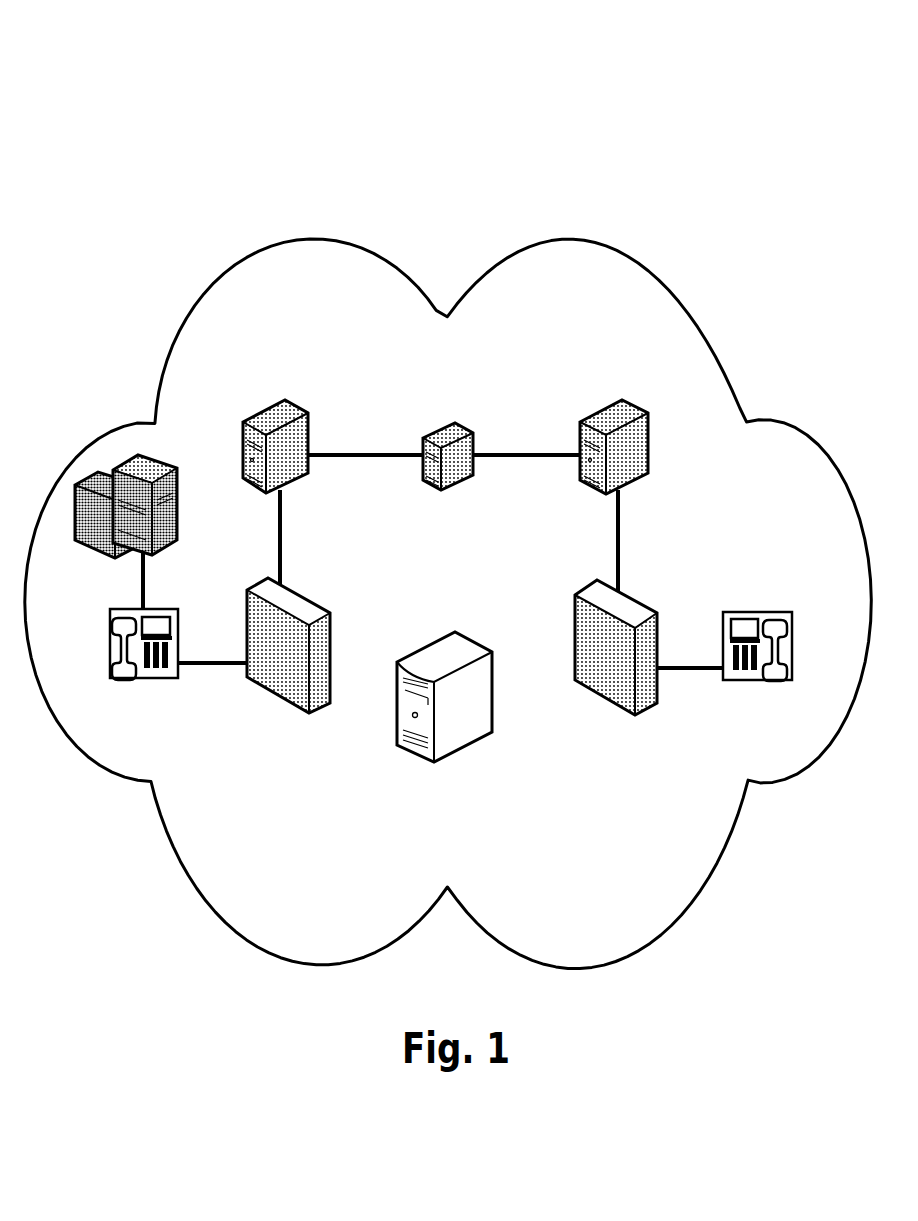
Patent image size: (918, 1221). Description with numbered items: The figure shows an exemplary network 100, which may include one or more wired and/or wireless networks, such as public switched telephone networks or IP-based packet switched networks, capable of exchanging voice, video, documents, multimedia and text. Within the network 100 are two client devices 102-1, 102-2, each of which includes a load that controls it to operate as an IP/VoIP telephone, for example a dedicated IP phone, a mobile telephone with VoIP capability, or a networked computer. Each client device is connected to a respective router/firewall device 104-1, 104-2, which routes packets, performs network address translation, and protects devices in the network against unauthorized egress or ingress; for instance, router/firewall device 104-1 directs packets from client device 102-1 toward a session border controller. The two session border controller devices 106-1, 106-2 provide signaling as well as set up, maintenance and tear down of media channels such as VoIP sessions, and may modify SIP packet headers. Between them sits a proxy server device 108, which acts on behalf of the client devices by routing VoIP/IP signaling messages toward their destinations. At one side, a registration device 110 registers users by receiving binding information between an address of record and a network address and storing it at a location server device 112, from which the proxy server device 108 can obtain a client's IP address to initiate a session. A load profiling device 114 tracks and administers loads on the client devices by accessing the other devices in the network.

The network 100 is at (448, 104).
The client device 102-1 is at (144, 678).
The client device 102-2 is at (756, 680).
The router/firewall device 104-1 is at (277, 655).
The router/firewall device 104-2 is at (605, 655).
The session border controller device 106-1 is at (270, 437).
The session border controller device 106-2 is at (627, 437).
The proxy server device 108 is at (448, 440).
The registration device 110 is at (100, 482).
The location server device 112 is at (153, 486).
The load profiling device 114 is at (433, 762).